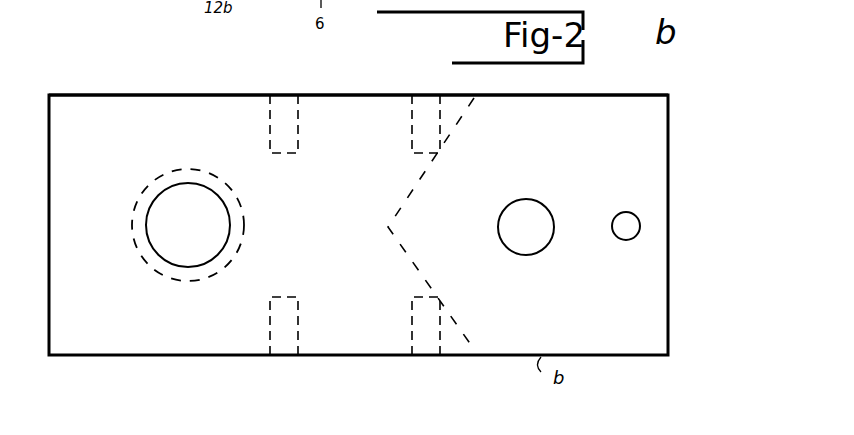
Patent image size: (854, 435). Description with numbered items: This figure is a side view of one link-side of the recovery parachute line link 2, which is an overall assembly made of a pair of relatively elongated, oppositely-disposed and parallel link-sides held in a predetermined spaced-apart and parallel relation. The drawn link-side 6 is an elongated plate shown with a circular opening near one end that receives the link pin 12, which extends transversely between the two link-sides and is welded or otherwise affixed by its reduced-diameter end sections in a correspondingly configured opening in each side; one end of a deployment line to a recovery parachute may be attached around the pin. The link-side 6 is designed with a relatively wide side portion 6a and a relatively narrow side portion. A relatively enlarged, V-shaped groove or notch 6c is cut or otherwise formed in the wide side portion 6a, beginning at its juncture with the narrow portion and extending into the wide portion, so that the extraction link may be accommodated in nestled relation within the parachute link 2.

The recovery parachute line link 2 is at (150, 362).
The link-side 6 is at (119, 96).
The relatively wide side portion 6a is at (197, 115).
The V-shaped groove 6c is at (456, 120).
The link pin 12 is at (210, 218).